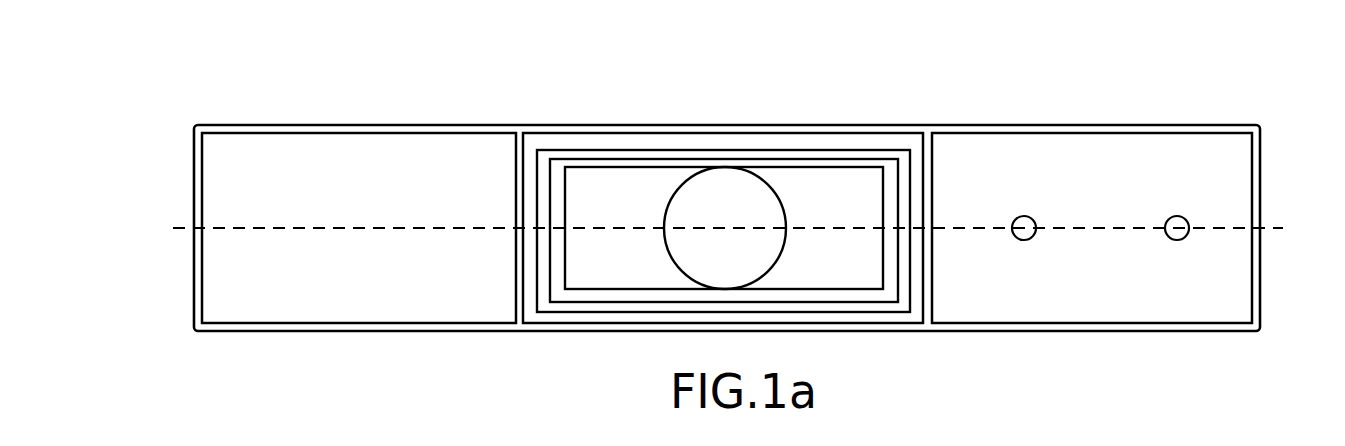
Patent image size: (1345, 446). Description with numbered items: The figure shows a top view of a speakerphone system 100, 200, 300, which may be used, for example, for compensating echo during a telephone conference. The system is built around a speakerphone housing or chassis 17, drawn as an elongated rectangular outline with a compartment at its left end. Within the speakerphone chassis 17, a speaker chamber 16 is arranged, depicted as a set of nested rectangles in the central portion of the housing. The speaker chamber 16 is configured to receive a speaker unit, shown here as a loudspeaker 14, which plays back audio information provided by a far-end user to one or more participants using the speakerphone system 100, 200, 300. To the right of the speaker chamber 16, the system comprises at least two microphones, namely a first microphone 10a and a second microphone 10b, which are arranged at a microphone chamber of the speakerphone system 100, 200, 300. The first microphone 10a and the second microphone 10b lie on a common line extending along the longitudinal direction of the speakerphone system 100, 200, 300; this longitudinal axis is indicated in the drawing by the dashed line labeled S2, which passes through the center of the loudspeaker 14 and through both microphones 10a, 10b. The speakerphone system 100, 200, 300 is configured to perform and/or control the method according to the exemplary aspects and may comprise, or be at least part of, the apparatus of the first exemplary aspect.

The speakerphone system 100 is at (727, 165).
The speakerphone system 200 is at (727, 165).
The speakerphone system 300 is at (447, 60).
The speakerphone housing or chassis 17 is at (327, 128).
The speaker chamber 16 is at (620, 192).
The loudspeaker 14 is at (736, 207).
The first microphone 10a is at (1018, 216).
The second microphone 10b is at (1176, 215).
The section axis S2 is at (750, 229).